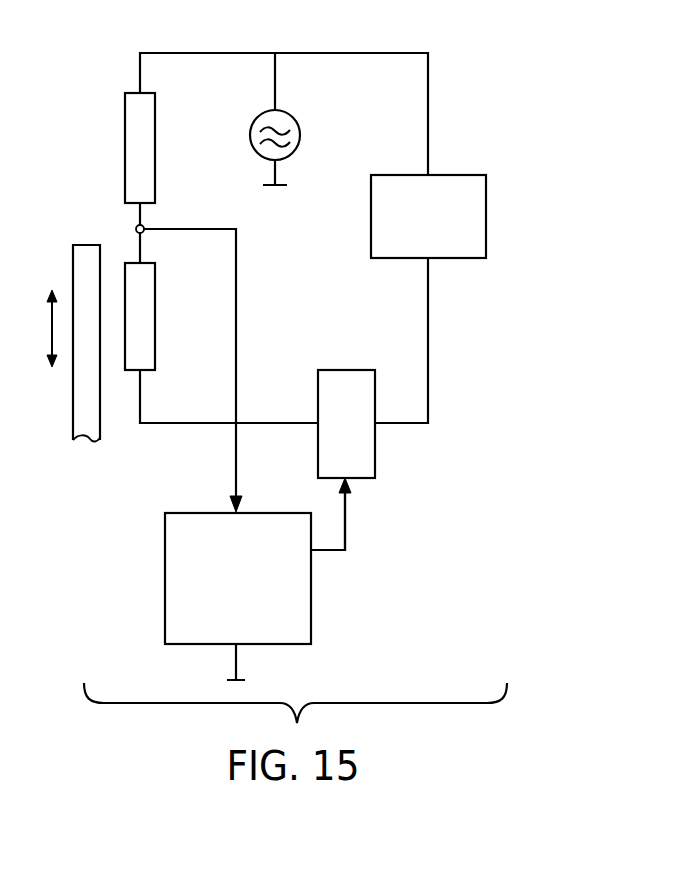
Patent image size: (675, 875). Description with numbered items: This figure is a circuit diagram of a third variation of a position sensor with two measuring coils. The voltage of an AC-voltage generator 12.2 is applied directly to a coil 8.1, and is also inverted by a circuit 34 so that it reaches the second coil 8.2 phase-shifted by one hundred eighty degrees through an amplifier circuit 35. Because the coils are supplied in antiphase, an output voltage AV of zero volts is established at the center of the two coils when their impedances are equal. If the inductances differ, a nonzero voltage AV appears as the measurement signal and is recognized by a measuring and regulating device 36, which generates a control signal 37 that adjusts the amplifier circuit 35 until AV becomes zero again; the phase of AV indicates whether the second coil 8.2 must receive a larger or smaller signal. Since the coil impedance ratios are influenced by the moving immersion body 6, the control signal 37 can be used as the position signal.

The immersion body 6 is at (82, 412).
The coil 8.1 is at (156, 145).
The second coil 8.2 is at (156, 313).
The AC-voltage generator 12.2 is at (300, 137).
The circuit 34 is at (487, 213).
The amplifier circuit 35 is at (376, 448).
The measuring and regulating device 36 is at (312, 616).
The control signal 37 is at (346, 528).